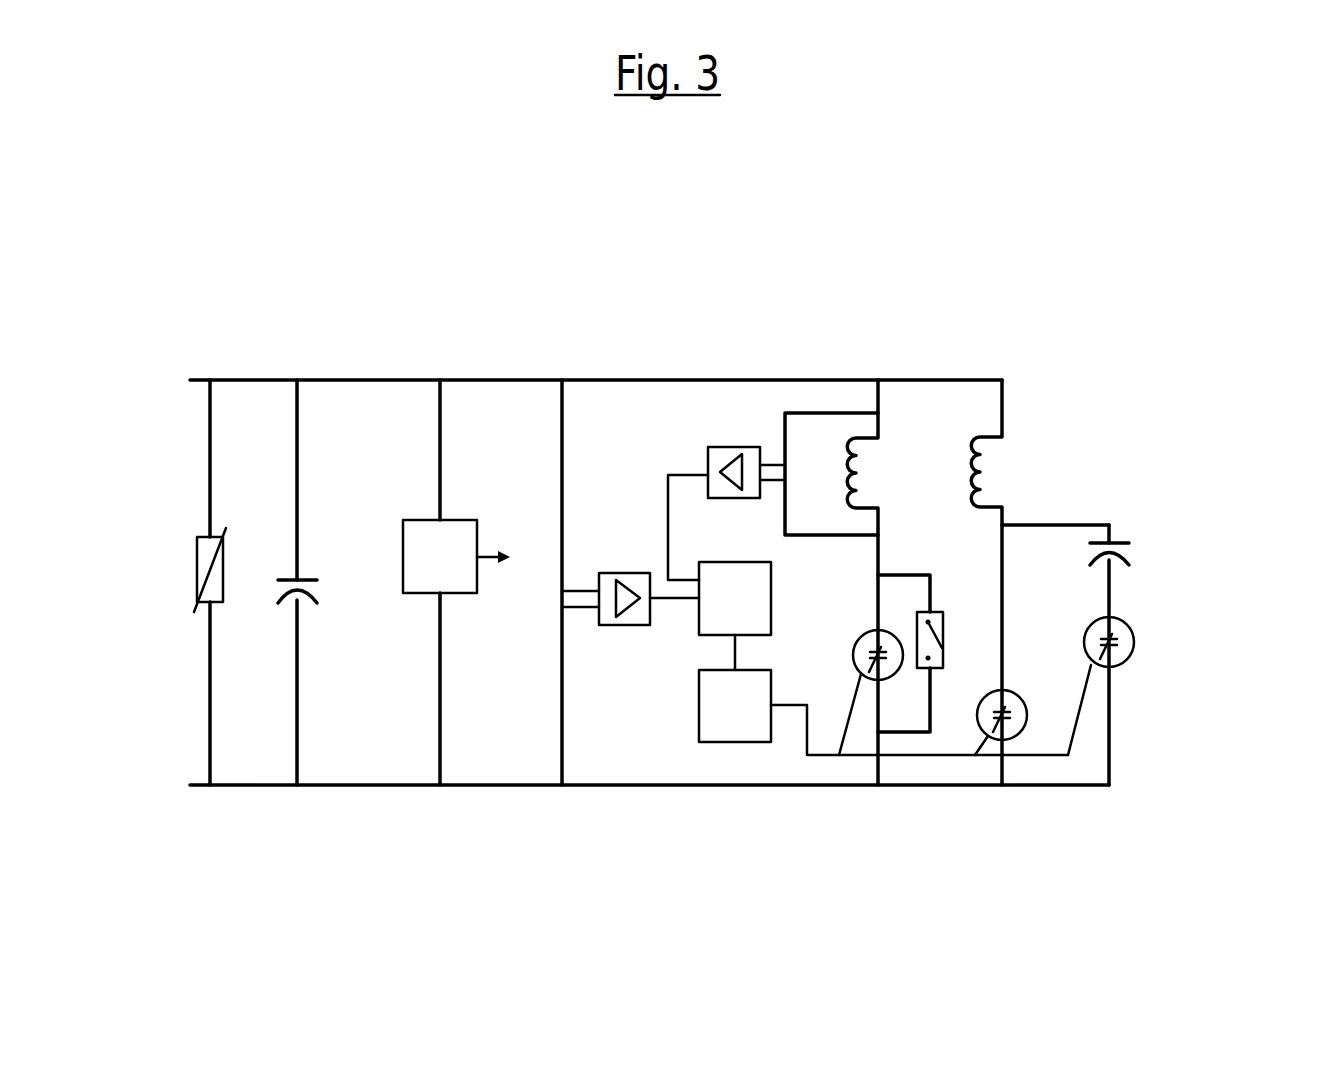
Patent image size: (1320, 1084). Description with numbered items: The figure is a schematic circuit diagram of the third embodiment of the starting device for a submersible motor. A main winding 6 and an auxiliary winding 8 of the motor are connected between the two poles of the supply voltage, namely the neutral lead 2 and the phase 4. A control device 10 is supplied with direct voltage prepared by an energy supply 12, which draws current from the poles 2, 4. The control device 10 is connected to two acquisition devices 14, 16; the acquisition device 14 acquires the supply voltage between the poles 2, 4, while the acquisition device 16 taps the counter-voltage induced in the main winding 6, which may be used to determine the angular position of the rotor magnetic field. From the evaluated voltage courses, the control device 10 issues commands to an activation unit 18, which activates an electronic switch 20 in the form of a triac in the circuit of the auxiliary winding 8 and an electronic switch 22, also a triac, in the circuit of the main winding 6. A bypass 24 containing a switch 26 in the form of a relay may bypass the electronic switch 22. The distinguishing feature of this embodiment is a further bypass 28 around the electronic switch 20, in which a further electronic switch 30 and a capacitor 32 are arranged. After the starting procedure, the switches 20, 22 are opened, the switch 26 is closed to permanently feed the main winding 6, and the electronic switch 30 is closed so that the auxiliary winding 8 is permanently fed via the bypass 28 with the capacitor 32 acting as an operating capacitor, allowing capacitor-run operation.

The neutral lead 2 is at (208, 787).
The phase 4 is at (210, 380).
The main winding 6 is at (877, 453).
The auxiliary winding 8 is at (1003, 452).
The control device 10 is at (735, 598).
The energy supply 12 is at (456, 582).
The acquisition device 14 is at (632, 573).
The acquisition device 16 is at (722, 468).
The activation unit 18 is at (735, 706).
The electronic switch 20 is at (1013, 735).
The electronic switch 22 is at (877, 682).
The bypass 24 is at (937, 588).
The switch 26 is at (942, 648).
The further bypass 28 is at (1122, 768).
The further electronic switch 30 is at (1140, 643).
The capacitor 32 is at (1134, 550).